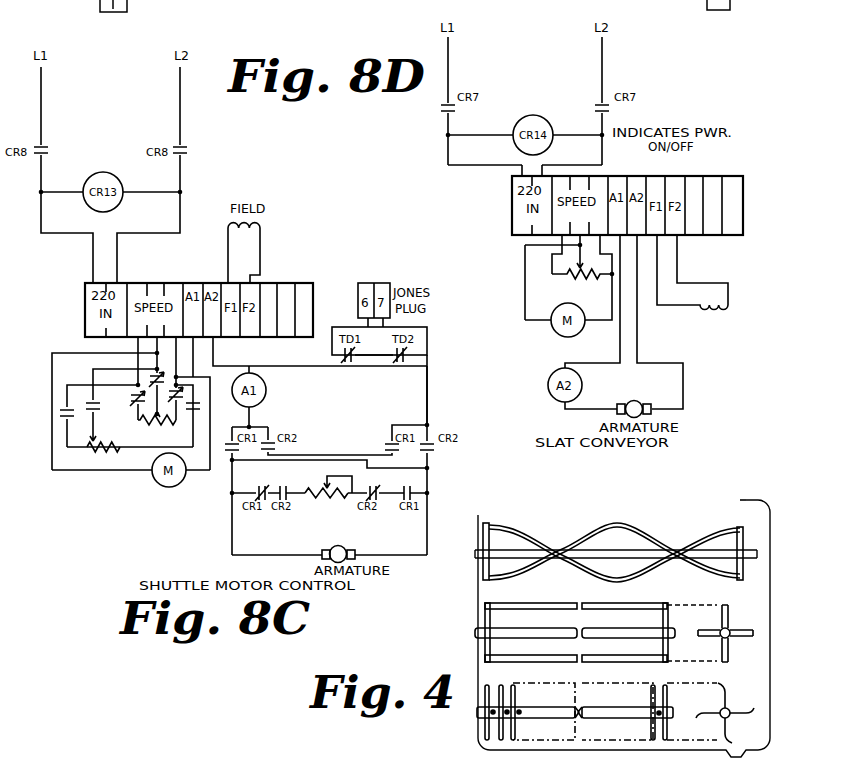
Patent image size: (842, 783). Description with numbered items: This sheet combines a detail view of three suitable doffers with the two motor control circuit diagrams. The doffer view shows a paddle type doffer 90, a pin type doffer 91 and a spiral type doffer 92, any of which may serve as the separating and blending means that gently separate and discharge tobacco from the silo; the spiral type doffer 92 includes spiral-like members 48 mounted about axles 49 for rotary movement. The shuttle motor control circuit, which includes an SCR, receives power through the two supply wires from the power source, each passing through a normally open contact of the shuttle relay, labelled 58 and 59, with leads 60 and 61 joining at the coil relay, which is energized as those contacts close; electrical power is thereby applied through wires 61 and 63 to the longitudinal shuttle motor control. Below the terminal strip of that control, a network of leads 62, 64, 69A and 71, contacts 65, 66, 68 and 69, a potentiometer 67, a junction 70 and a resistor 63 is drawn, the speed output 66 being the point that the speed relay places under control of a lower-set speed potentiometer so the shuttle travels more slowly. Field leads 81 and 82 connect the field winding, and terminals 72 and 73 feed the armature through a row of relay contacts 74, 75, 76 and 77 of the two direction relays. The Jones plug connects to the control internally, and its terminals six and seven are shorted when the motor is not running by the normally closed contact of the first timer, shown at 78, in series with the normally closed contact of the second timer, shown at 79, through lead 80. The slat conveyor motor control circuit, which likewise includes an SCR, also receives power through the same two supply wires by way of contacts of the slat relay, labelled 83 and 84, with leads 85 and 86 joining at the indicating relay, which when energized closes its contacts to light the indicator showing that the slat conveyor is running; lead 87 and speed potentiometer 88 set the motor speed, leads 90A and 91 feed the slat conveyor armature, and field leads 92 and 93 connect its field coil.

In FIG. 4, the spiral-like member 48 is at (632, 528).
In FIG. 4, the axle 49 is at (645, 557).
In FIG. 8C, the contact CR8 58 is at (46, 141).
In FIG. 8C, the contact CR8 59 is at (185, 141).
In FIG. 8C, the lead 60 is at (62, 184).
In FIG. 8C, the wire 61 is at (151, 184).
In FIG. 8C, the lead 62 is at (99, 408).
In FIG. 8C, the wire 63 is at (94, 442).
In FIG. 8C, the lead 64 is at (93, 411).
In FIG. 8C, the contact 65 is at (161, 383).
In FIG. 8C, the speed output 66 is at (131, 405).
In FIG. 8C, the potentiometer 67 is at (157, 410).
In FIG. 8C, the contact 68 is at (187, 416).
In FIG. 8C, the contact 69 is at (101, 422).
In FIG. 8C, the lead 69A is at (130, 438).
In FIG. 8C, the junction 70 is at (253, 419).
In FIG. 8C, the lead 71 is at (436, 396).
In FIG. 8C, the terminal 72 is at (419, 504).
In FIG. 8C, the terminal 73 is at (320, 506).
In FIG. 8C, the contact CR1 74 is at (263, 488).
In FIG. 8C, the contact CR2 and resistor 75 is at (316, 487).
In FIG. 8C, the contact CR2 76 is at (366, 488).
In FIG. 8C, the contact CR1 77 is at (397, 487).
In FIG. 8C, the time delay contact TD1 78 is at (342, 337).
In FIG. 8C, the time delay contact TD2 79 is at (419, 342).
In FIG. 8C, the lead 80 is at (374, 347).
In FIG. 8C, the field lead 81 is at (219, 255).
In FIG. 8C, the field lead 82 is at (264, 255).
In FIG. 8D, the contact CR7 83 is at (454, 92).
In FIG. 8D, the contact CR7 84 is at (608, 92).
In FIG. 8D, the lead 85 is at (485, 158).
In FIG. 8D, the lead 86 is at (572, 158).
In FIG. 8D, the lead 87 is at (546, 254).
In FIG. 8D, the speed potentiometer 88 is at (582, 265).
In FIG. 8D, the paddle type doffer 90 is at (622, 405).
In FIG. 4, the paddle type doffer 90 is at (683, 612).
In FIG. 8D, the lead 90A is at (592, 301).
In FIG. 8D, the pin type doffer 91 is at (660, 322).
In FIG. 4, the pin type doffer 91 is at (691, 693).
In FIG. 8D, the spiral type doffer 92 is at (692, 272).
In FIG. 4, the spiral type doffer 92 is at (703, 502).
In FIG. 8D, the field lead 93 is at (702, 270).